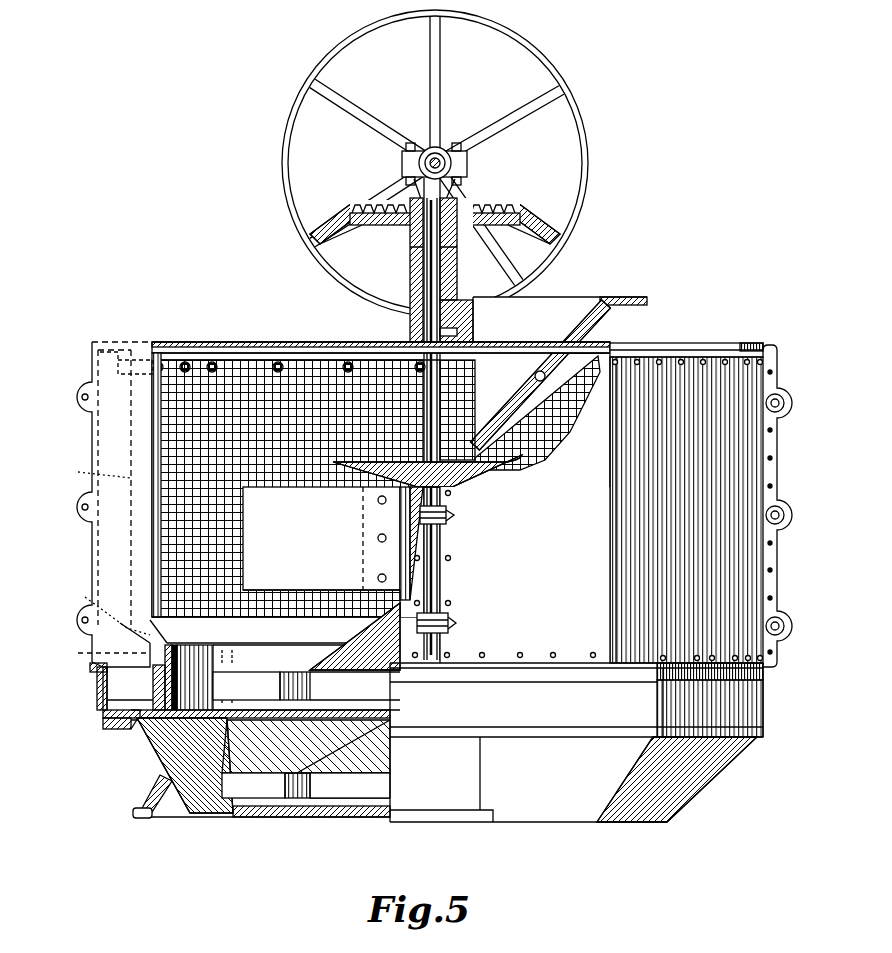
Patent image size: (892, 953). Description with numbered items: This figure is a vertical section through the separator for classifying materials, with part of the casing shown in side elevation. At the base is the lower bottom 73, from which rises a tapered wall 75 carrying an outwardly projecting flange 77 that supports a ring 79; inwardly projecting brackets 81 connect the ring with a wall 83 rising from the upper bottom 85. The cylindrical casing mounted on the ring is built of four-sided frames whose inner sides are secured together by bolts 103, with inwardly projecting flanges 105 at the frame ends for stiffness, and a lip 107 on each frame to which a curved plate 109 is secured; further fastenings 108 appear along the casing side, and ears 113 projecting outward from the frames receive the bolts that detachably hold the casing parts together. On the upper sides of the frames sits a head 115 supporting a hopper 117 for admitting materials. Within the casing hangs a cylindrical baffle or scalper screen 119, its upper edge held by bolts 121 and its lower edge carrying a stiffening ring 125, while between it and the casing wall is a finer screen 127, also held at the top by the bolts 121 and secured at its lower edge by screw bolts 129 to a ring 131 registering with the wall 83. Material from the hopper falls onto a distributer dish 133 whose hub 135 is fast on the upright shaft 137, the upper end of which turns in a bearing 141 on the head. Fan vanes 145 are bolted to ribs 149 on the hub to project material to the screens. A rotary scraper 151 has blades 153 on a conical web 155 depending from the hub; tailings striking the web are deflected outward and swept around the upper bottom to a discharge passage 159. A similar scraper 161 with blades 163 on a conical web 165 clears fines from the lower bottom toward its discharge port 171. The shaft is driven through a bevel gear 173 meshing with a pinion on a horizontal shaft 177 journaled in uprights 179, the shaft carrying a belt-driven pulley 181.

The lower bottom 73 is at (300, 821).
The tapered wall 75 is at (153, 751).
The outwardly projecting flange 77 is at (108, 729).
The ring 79 is at (100, 688).
The inwardly projecting brackets 81 is at (120, 698).
The wall 83 is at (128, 738).
The upper bottom 85 is at (225, 716).
The bolts 103 is at (81, 394).
The inwardly projecting flanges 105 is at (100, 441).
The lip 107 is at (100, 353).
The bolts 108 is at (778, 506).
The curved plate 109 is at (653, 360).
The ears 113 is at (452, 516).
The head 115 is at (300, 349).
The hopper 117 is at (583, 303).
The baffle or scalper screen 119 is at (326, 352).
The bolts 121 is at (187, 362).
The stiffening ring 125 is at (166, 622).
The finer screen 127 is at (88, 468).
The screw bolts 129 is at (85, 597).
The ring 131 is at (97, 655).
The distributer dish 133 is at (362, 472).
The hub 135 is at (403, 511).
The upright shaft 137 is at (424, 285).
The bearing 141 is at (449, 265).
The vanes 145 is at (321, 538).
The ribs 149 is at (372, 598).
The rotary scraper 151 is at (330, 667).
The blades 153 is at (233, 672).
The conical web 155 is at (353, 656).
The discharge passage 159 is at (481, 779).
The scraper 161 is at (340, 767).
The blades 163 is at (250, 781).
The conical web 165 is at (350, 751).
The discharge port 171 is at (176, 822).
The bevel gear 173 is at (346, 207).
The horizontal shaft 177 is at (449, 148).
The uprights 179 is at (500, 267).
The pulley 181 is at (573, 83).